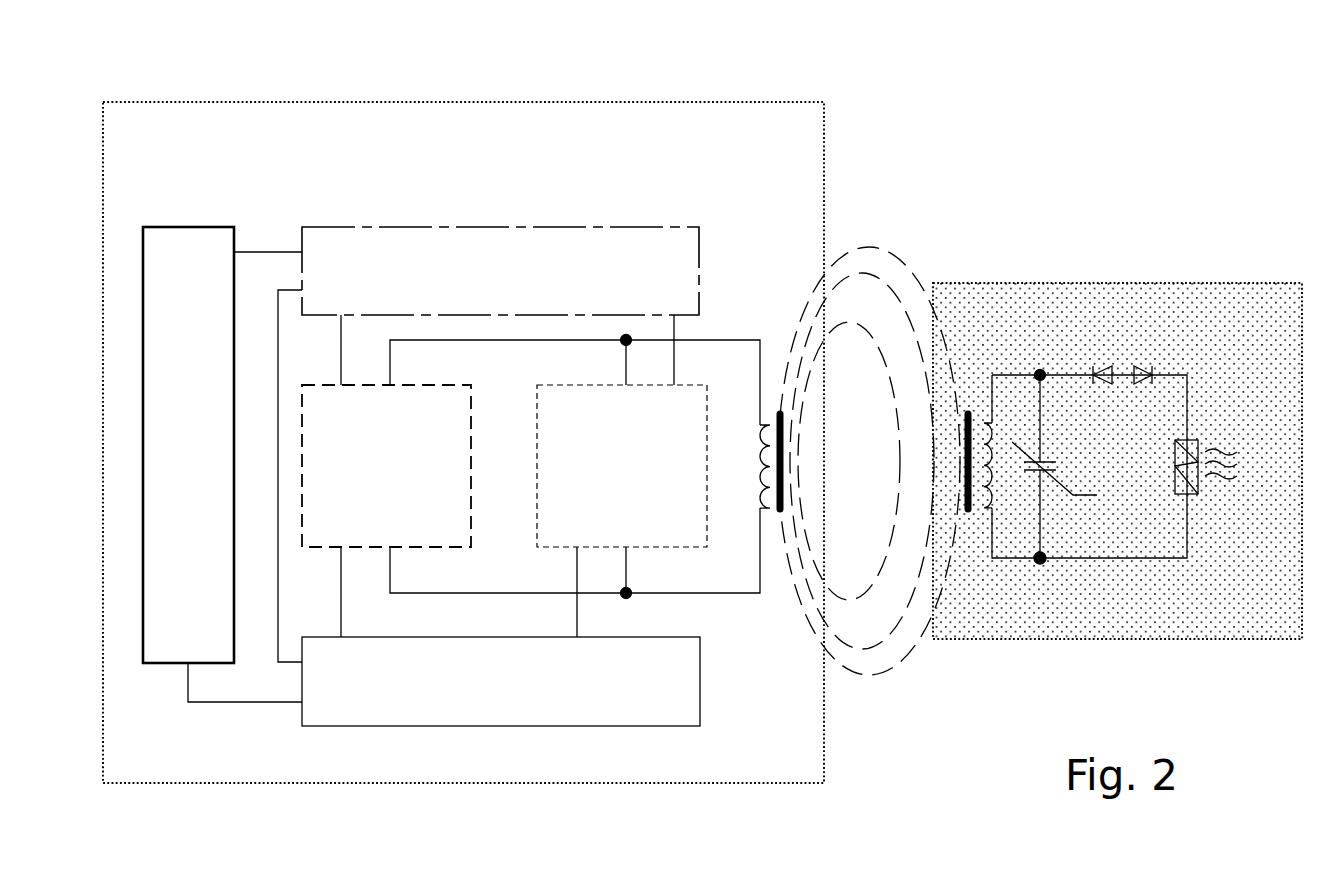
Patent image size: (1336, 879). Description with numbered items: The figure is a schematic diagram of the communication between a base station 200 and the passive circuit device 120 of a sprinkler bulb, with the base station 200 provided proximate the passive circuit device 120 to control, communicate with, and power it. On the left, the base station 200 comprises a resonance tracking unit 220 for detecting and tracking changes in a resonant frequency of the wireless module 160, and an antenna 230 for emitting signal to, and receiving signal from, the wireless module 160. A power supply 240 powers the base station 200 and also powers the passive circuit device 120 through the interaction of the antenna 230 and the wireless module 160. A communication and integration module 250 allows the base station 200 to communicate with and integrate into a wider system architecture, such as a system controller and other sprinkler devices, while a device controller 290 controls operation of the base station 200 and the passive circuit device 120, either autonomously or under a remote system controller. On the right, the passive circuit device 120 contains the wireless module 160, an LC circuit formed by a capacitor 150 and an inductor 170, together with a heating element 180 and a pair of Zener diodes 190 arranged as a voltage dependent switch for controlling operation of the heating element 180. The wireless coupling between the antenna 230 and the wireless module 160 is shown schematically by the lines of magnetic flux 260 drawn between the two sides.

The base station 200 is at (548, 138).
The communication and integration module 250 is at (165, 457).
The power supply 240 is at (477, 288).
The resonance tracking unit 220 is at (363, 477).
The antenna 230 is at (599, 477).
The device controller 290 is at (477, 699).
The lines of magnetic flux 260 is at (880, 676).
The passive circuit device 120 is at (1025, 307).
The wireless module 160 is at (1013, 564).
The inductor 170 is at (987, 433).
The Zener diodes 190 is at (1096, 366).
The heating element 180 is at (1197, 440).
The capacitor 150 is at (1046, 462).